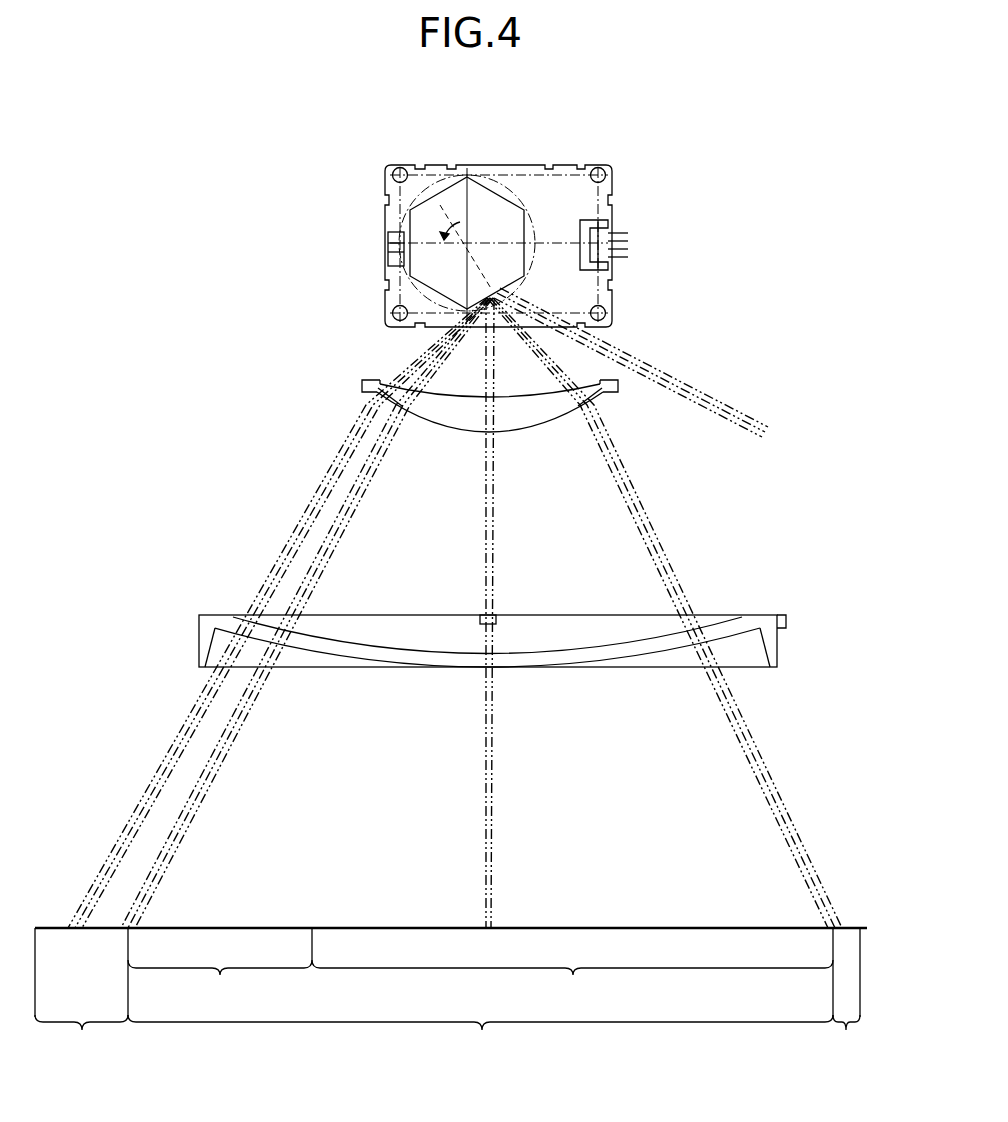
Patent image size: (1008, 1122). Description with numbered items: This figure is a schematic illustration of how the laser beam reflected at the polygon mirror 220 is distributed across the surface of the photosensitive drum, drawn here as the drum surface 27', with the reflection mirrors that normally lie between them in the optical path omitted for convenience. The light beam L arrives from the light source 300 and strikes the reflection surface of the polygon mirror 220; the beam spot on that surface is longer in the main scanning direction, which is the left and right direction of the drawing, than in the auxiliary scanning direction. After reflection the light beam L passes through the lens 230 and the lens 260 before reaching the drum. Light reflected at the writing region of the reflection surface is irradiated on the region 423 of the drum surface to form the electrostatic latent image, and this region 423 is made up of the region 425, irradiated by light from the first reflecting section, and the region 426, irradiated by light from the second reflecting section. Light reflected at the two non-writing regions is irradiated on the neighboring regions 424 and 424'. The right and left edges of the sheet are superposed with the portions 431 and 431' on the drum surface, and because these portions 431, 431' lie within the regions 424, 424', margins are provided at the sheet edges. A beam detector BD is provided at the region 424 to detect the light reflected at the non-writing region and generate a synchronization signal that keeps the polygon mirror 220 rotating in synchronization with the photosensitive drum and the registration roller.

The polygon mirror 220 is at (488, 208).
The first scanning lens 230 is at (525, 410).
The second scanning lens 260 is at (603, 652).
The photoconductor drum surface 27' is at (451, 880).
The light source unit 300 is at (800, 442).
The light beam L is at (671, 358).
The portion 431 is at (81, 912).
The portion 431' is at (856, 923).
The beam detector BD is at (80, 955).
The region 423 is at (480, 1041).
The region 424 is at (81, 1041).
The region 424' is at (849, 1041).
The region 425 is at (220, 969).
The region 426 is at (572, 985).